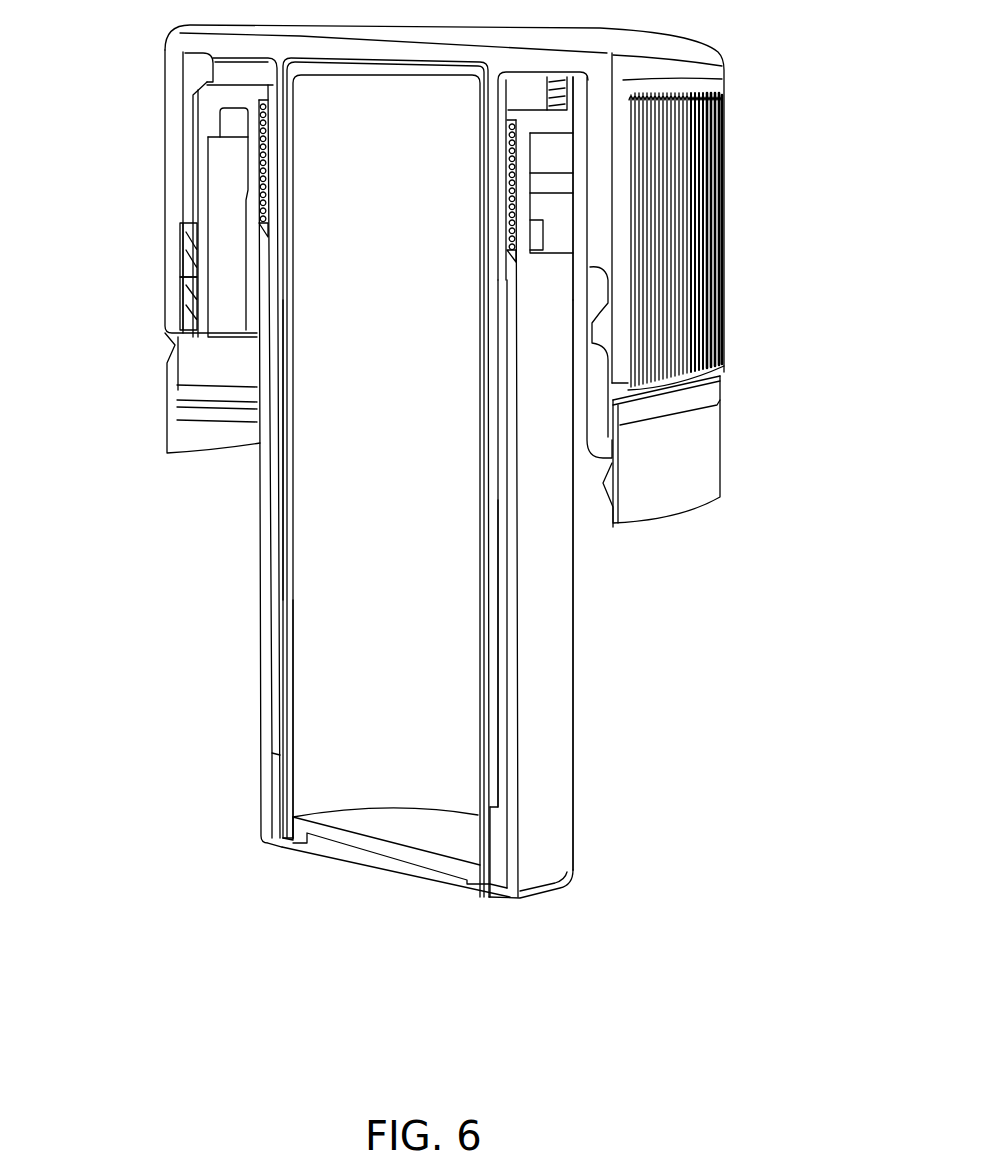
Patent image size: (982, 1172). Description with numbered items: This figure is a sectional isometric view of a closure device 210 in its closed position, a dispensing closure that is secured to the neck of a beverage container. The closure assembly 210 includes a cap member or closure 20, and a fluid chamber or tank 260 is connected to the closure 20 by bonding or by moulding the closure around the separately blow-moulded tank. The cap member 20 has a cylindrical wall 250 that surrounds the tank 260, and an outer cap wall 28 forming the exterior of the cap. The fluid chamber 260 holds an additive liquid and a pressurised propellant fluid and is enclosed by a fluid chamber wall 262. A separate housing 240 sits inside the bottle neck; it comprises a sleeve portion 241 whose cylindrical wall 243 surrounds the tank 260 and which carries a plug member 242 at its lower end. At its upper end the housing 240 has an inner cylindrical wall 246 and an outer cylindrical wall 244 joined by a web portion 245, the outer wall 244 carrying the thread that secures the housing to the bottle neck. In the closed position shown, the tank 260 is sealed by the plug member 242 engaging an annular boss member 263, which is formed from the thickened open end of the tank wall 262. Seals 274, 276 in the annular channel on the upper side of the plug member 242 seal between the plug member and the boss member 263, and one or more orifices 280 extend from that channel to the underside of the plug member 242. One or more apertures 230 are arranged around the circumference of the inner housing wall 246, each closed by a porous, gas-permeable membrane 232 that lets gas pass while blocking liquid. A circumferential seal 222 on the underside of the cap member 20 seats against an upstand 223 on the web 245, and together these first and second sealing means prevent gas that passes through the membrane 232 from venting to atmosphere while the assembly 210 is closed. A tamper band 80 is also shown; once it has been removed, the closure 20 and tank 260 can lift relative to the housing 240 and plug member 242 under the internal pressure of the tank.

The cap member 20 is at (765, 296).
The outer cap wall 28 is at (175, 312).
The tamper band 80 is at (672, 498).
The closure device 210 is at (632, 583).
The circumferential seal 222 is at (218, 64).
The upstand 223 is at (205, 66).
The aperture 230 is at (540, 268).
The gas-permeable membrane 232 is at (257, 205).
The housing 240 is at (253, 600).
The sleeve portion 241 is at (573, 800).
The plug member 242 is at (440, 882).
The cylindrical wall 243 is at (573, 690).
The outer cylindrical wall 244 is at (203, 243).
The web portion 245 is at (220, 113).
The inner cylindrical wall 246 is at (253, 157).
The cylindrical wall 250 is at (497, 778).
The fluid chamber 260 is at (430, 476).
The fluid chamber wall 262 is at (293, 612).
The annular boss member 263 is at (295, 785).
The seal 274 is at (350, 843).
The seal 276 is at (278, 792).
The orifice 280 is at (289, 847).